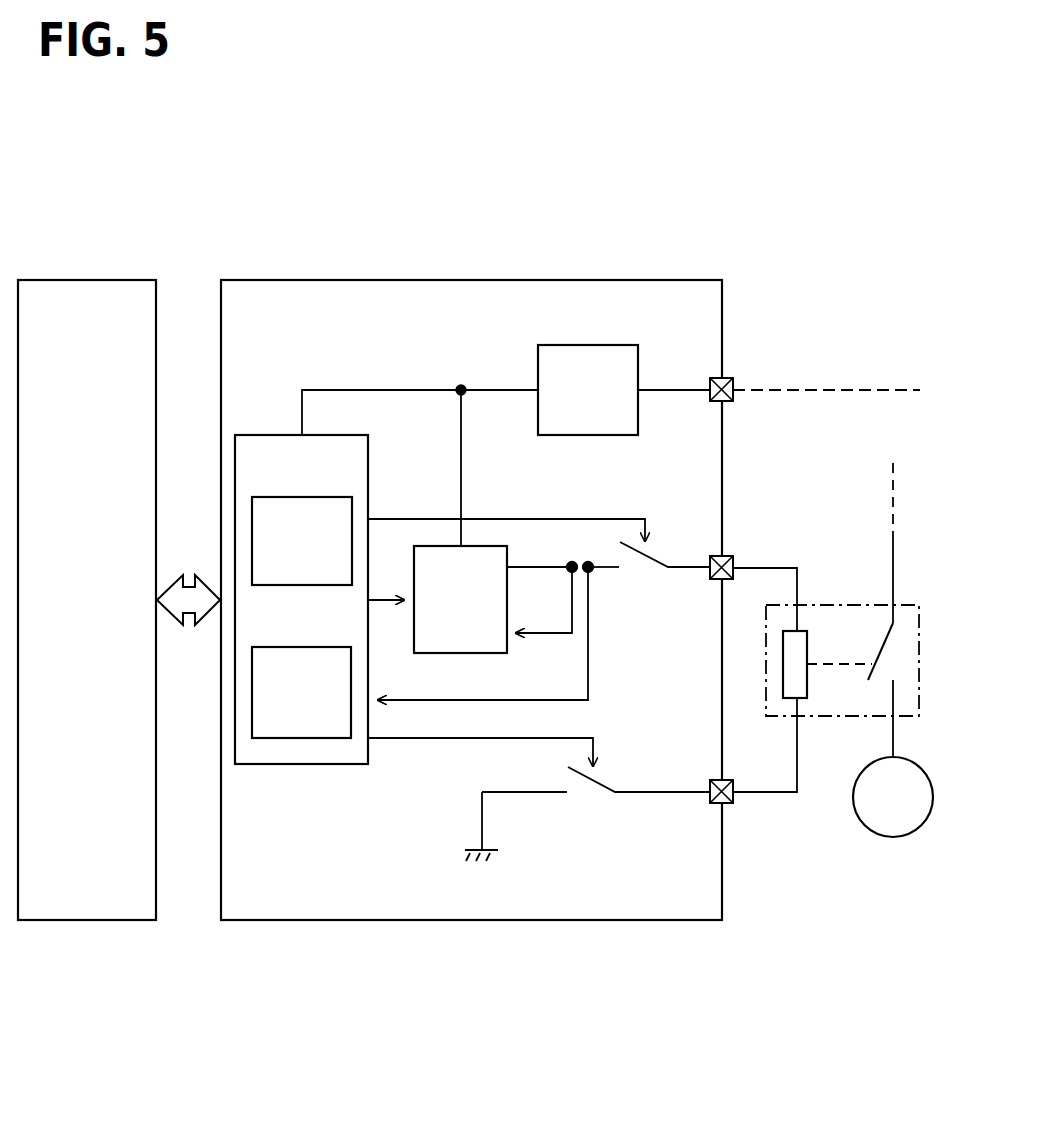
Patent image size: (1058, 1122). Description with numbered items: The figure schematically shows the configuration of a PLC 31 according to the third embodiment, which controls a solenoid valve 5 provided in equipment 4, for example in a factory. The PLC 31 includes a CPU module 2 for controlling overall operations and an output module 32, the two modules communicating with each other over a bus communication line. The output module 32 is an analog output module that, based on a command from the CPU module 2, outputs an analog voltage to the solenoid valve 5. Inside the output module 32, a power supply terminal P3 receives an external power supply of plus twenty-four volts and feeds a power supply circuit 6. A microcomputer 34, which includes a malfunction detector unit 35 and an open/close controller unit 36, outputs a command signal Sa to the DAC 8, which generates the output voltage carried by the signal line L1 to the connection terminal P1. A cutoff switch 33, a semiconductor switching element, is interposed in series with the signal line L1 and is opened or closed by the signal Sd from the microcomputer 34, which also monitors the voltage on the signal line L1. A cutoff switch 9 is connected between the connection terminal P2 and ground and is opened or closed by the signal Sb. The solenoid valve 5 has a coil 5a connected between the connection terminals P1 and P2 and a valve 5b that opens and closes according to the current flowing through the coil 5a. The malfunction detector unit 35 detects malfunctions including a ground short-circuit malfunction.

The CPU module 2 is at (85, 280).
The PLC 31 is at (581, 195).
The output module 32 is at (470, 280).
The power supply circuit 6 is at (592, 345).
The microcomputer 34 is at (263, 435).
The malfunction detector unit 35 is at (281, 587).
The open/close controller unit 36 is at (316, 647).
The digital-to-analog converter 8 is at (460, 655).
The signal line L1 is at (547, 567).
The cutoff switch 33 is at (645, 580).
The cutoff switch 9 is at (591, 800).
The connection terminal P1 is at (724, 580).
The connection terminal P2 is at (727, 780).
The power supply terminal P3 is at (727, 378).
The solenoid valve 5 is at (847, 605).
The coil 5a is at (810, 676).
The valve 5b is at (872, 650).
The equipment 4 is at (893, 838).